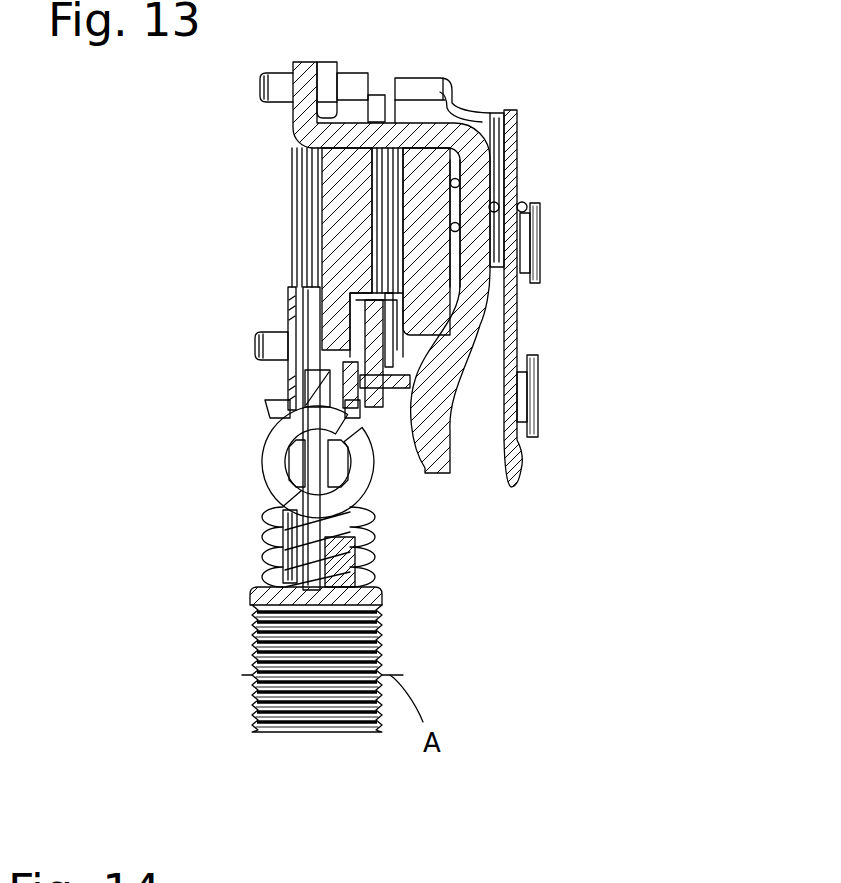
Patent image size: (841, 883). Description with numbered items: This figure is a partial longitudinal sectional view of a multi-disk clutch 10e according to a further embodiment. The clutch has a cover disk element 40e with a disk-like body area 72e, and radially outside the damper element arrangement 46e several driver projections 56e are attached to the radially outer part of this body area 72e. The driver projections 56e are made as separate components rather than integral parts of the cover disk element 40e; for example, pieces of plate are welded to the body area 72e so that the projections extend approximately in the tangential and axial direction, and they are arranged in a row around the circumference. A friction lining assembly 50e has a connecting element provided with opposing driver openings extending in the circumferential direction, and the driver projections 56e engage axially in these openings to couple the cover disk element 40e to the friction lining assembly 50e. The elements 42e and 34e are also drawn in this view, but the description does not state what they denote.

The multi-disk clutch 10e is at (603, 150).
The friction lining assembly 50e is at (420, 252).
The driver projections 56e is at (402, 377).
The stopper 42e is at (305, 375).
The damper element arrangement 46e is at (248, 462).
The disk-like body area 72e is at (368, 507).
The cover disk element 40e is at (348, 553).
The adjusting screw 34e is at (378, 647).